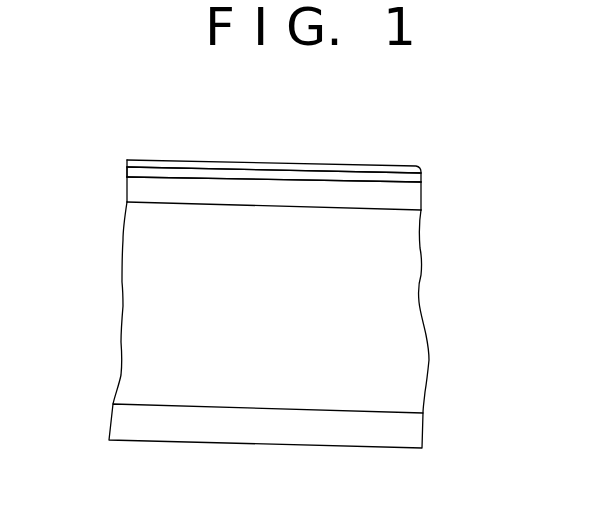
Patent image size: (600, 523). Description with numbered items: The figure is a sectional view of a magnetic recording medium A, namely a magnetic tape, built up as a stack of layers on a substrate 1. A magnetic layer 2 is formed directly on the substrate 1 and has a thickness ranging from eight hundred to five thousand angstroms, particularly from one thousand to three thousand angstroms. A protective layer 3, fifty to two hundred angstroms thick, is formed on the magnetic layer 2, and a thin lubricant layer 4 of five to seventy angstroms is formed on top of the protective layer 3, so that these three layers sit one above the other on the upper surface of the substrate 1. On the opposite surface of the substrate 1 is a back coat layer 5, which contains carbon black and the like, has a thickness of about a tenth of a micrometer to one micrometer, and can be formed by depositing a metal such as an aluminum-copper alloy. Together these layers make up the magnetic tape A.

The substrate 1 is at (143, 300).
The magnetic layer 2 is at (127, 187).
The protective layer 3 is at (422, 179).
The lubricant layer 4 is at (280, 163).
The back coat layer 5 is at (118, 426).
The magnetic recording medium A is at (469, 268).